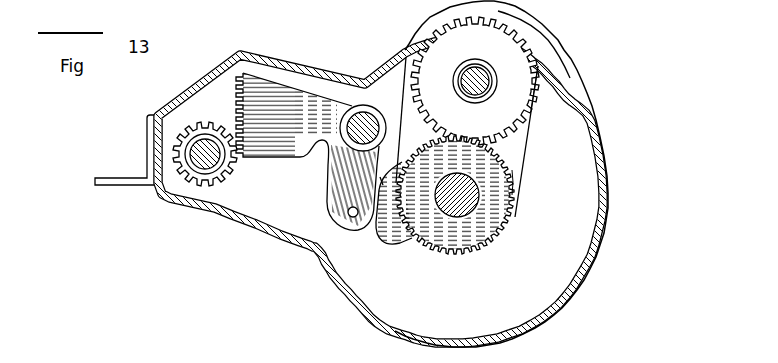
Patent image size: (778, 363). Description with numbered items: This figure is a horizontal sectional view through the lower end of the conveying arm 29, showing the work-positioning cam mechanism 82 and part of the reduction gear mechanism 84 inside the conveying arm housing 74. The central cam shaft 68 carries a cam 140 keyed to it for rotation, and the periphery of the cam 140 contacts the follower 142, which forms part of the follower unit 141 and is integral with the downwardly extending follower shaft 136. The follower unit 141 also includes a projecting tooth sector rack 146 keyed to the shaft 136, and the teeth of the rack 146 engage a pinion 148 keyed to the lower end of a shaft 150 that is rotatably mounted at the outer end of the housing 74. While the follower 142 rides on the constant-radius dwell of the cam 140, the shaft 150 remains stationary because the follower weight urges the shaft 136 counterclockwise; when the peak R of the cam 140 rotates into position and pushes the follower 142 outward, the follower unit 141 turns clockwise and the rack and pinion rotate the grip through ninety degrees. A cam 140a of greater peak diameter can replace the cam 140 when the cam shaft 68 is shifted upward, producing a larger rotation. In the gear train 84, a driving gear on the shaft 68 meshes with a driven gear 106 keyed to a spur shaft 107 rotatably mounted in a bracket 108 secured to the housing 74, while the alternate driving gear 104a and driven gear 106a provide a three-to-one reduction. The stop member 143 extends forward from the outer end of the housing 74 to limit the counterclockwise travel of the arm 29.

The conveying arm 29 is at (205, 240).
The conveying arm housing 74 is at (606, 178).
The stop member 143 is at (118, 183).
The follower unit 141 is at (307, 154).
The tooth sector rack 146 is at (249, 141).
The follower 142 is at (347, 214).
The follower shaft 136 is at (365, 117).
The pinion 148 is at (216, 154).
The shaft 150 is at (205, 136).
The reduction gear mechanism 84 is at (495, 86).
The bracket 108 is at (457, 66).
The spur shaft 107 is at (477, 66).
The work-positioning cam mechanism 82 is at (450, 220).
The cam 140 is at (468, 232).
The work repositioning cam 140a is at (378, 233).
The cam shaft 68 is at (467, 197).
The driving gear 104a is at (514, 172).
The peak R is at (380, 172).
The driven gear 106 is at (545, 100).
The driven gear 106a is at (523, 83).